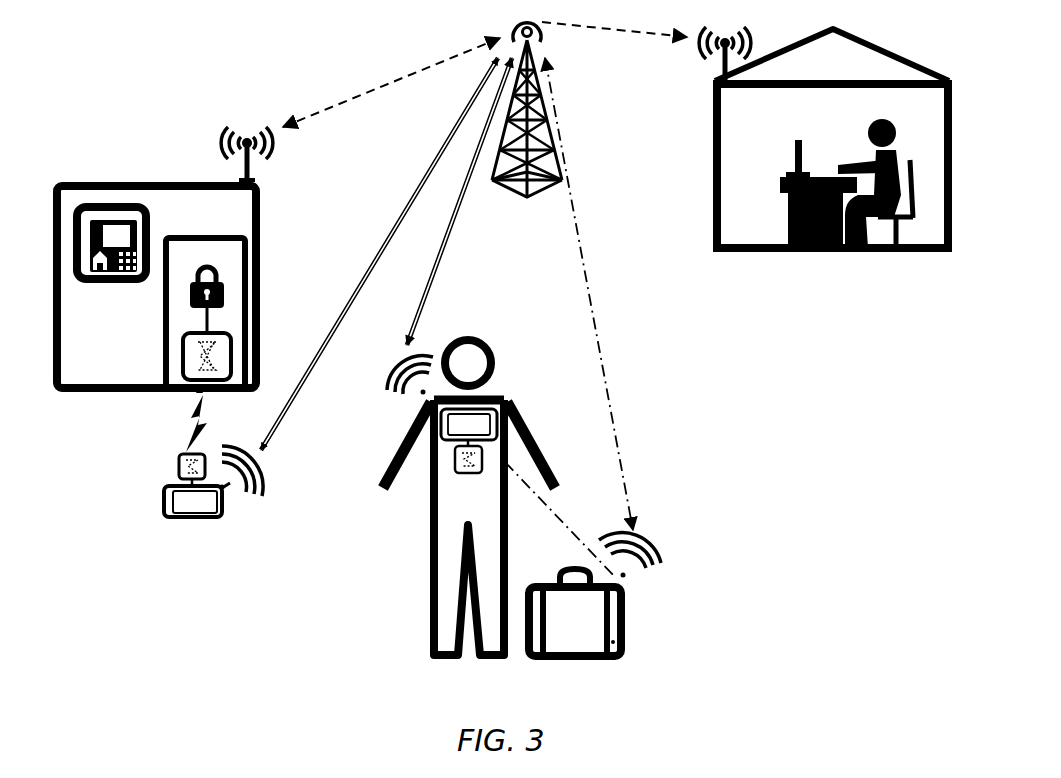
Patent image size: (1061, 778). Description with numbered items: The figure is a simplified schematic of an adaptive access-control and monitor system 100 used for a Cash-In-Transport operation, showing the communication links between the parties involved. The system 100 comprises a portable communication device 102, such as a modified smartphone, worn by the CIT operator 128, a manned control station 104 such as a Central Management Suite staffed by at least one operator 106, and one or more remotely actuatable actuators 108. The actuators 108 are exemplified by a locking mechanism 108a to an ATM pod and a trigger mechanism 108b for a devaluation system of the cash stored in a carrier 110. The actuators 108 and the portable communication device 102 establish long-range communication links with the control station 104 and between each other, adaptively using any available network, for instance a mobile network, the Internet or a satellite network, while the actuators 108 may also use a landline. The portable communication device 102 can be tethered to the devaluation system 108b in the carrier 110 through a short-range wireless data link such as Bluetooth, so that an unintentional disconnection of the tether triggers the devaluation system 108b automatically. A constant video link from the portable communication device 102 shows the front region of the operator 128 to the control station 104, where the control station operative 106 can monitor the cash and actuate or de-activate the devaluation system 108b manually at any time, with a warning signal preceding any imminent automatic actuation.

The adaptive access-control and monitor system 100 is at (763, 444).
The portable communication device 102 is at (185, 507).
The manned control station 104 is at (953, 227).
The operator 106 is at (905, 165).
The remotely actuatable actuators 108 is at (288, 249).
The locking mechanism 108a is at (223, 310).
The trigger mechanism for a devaluation system 108b is at (616, 642).
The carrier 110 is at (535, 662).
The operator 128 is at (452, 518).